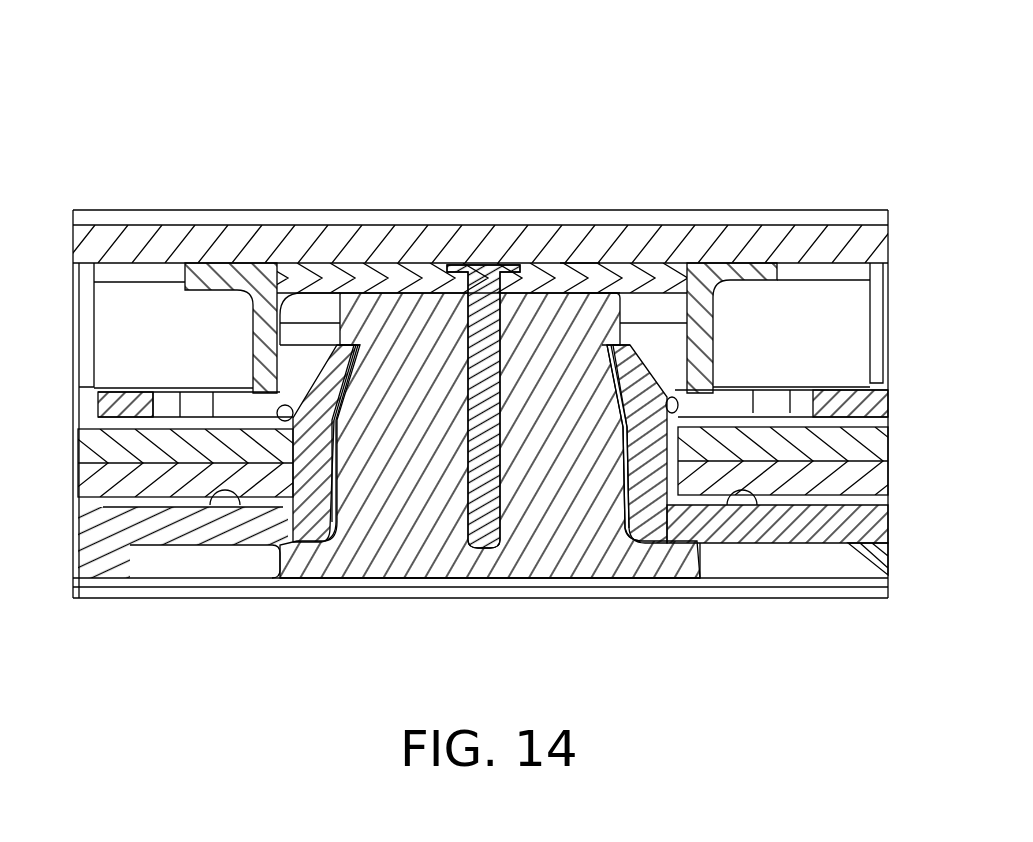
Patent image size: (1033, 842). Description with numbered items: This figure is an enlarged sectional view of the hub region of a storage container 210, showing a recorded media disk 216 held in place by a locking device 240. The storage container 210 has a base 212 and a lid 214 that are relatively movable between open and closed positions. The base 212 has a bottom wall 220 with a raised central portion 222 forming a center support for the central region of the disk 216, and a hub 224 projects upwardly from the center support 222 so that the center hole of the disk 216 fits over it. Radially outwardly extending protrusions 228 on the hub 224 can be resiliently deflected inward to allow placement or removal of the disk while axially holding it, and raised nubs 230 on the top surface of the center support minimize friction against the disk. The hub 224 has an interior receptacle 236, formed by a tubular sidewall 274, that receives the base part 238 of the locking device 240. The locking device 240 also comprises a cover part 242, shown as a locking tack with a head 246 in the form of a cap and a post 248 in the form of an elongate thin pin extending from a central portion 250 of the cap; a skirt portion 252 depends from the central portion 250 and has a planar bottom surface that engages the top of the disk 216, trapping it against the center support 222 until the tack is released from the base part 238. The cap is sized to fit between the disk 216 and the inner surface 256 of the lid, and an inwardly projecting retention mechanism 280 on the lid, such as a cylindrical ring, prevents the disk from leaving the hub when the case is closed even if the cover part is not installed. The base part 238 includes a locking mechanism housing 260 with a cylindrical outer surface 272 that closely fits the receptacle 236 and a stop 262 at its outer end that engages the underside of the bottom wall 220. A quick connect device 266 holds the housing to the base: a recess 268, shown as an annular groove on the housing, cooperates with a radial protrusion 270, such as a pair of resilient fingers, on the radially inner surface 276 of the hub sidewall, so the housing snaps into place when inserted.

The storage container 210 is at (628, 98).
The base 212 is at (253, 603).
The lid 214 is at (292, 203).
The disk 216 is at (855, 396).
The bottom wall 220 is at (172, 535).
The raised central portion 222 is at (138, 545).
The hub 224 is at (333, 360).
The protrusions 228 is at (278, 412).
The raised nubs 230 is at (227, 504).
The interior receptacle 236 is at (385, 350).
The base part 238 is at (428, 595).
The locking device 240 is at (553, 608).
The cover part 242 is at (716, 335).
The head 246 is at (415, 282).
The post 248 is at (572, 272).
The central portion 250 is at (590, 270).
The skirt portion 252 is at (242, 393).
The inner surface 256 is at (830, 268).
The locking mechanism housing 260 is at (367, 547).
The stop 262 is at (707, 567).
The quick connect device 266 is at (617, 367).
The recess 268 is at (663, 297).
The radial protrusion 270 is at (605, 393).
The cylindrical outer surface 272 is at (308, 530).
The tubular sidewall 274 is at (813, 443).
The radially inner surface 276 is at (337, 473).
The retention mechanism 280 is at (93, 306).